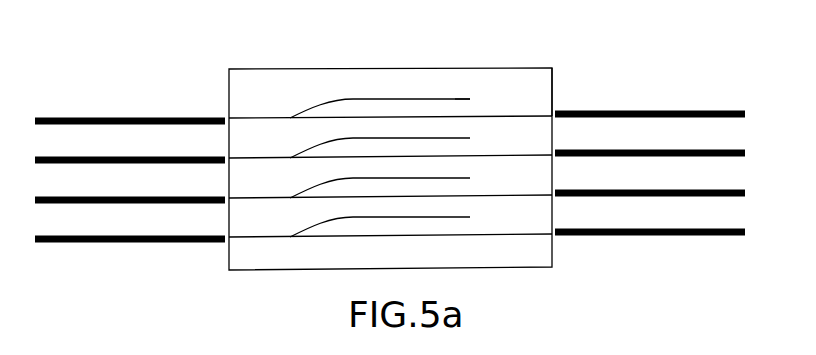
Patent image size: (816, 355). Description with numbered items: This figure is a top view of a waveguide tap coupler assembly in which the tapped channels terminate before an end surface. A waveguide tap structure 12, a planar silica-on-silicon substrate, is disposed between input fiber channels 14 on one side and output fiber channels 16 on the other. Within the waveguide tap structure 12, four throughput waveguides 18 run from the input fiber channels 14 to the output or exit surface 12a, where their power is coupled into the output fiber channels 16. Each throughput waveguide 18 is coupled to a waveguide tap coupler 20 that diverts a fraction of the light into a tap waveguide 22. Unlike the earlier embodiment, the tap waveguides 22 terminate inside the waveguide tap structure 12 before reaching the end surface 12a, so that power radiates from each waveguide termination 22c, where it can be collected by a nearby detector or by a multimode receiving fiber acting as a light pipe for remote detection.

The waveguide tap structure 12 is at (262, 272).
The output or exit surface 12a is at (553, 85).
The input fiber channels 14 is at (80, 243).
The output fiber channels 16 is at (710, 235).
The throughput waveguides 18 is at (353, 118).
The waveguide tap coupler 20 is at (290, 118).
The tap waveguides 22 is at (387, 99).
The waveguide termination 22c is at (470, 99).